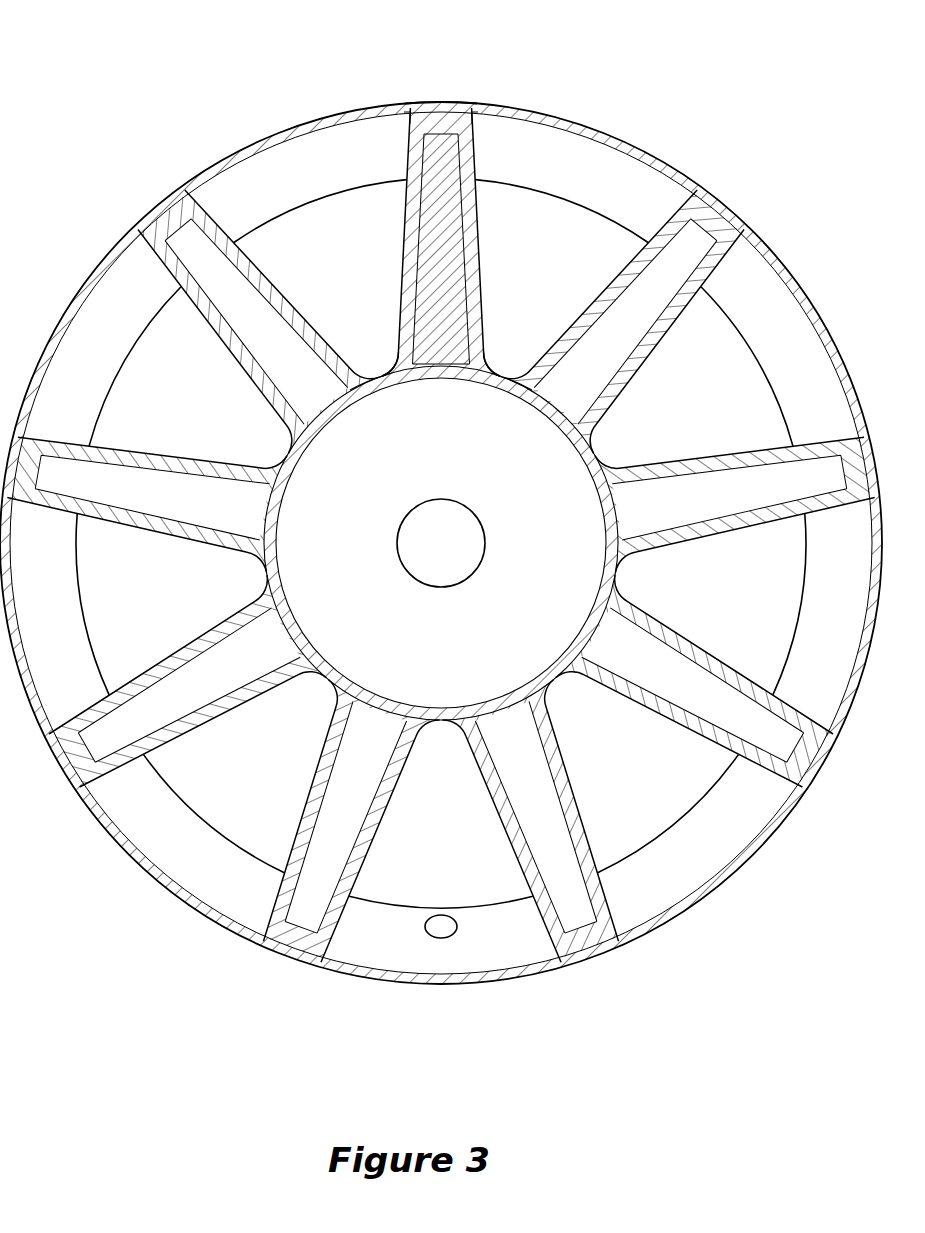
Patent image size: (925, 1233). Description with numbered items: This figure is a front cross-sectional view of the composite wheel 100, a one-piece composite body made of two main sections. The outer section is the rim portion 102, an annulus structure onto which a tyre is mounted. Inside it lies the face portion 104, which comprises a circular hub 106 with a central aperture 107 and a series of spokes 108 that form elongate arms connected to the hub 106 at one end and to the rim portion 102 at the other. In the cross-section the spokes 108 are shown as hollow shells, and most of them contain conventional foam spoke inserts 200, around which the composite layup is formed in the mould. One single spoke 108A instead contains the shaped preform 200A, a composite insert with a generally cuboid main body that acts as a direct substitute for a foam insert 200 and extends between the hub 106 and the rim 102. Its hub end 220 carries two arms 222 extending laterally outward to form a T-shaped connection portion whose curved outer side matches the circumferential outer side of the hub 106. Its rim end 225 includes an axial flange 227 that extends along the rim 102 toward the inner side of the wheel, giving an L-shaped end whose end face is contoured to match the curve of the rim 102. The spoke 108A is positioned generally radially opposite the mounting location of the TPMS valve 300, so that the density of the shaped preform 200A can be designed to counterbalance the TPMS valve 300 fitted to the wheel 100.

The composite wheel 100 is at (114, 68).
The rim portion 102 is at (816, 312).
The face portion 104 is at (121, 898).
The hub 106 is at (360, 553).
The central aperture 107 is at (441, 557).
The spokes 108 is at (295, 936).
The single spoke 108A is at (438, 127).
The foam spoke insert 200 is at (142, 499).
The shaped preform 200A is at (447, 233).
The hub end 220 is at (490, 366).
The arms 222 is at (360, 384).
The rim end 225 is at (418, 120).
The axial flange 227 is at (443, 115).
The TPMS valve 300 is at (441, 940).